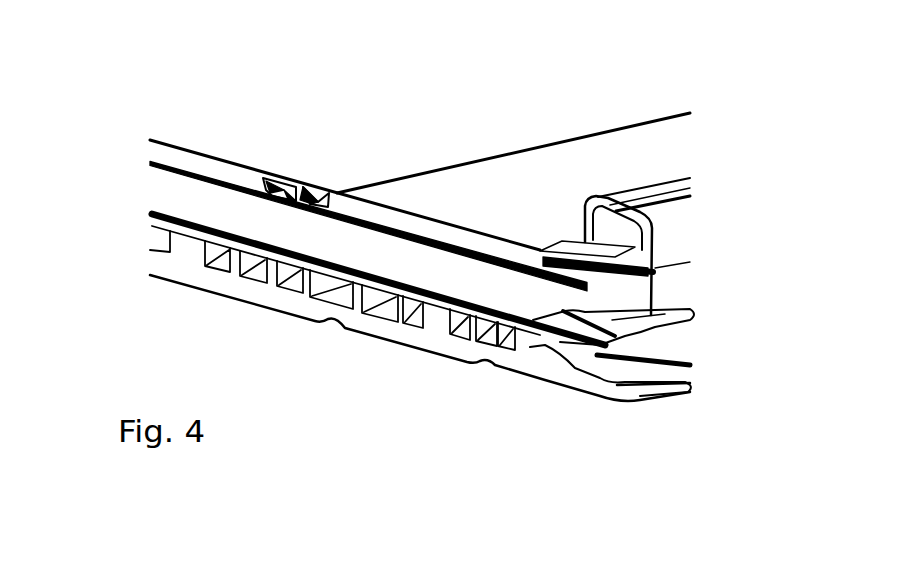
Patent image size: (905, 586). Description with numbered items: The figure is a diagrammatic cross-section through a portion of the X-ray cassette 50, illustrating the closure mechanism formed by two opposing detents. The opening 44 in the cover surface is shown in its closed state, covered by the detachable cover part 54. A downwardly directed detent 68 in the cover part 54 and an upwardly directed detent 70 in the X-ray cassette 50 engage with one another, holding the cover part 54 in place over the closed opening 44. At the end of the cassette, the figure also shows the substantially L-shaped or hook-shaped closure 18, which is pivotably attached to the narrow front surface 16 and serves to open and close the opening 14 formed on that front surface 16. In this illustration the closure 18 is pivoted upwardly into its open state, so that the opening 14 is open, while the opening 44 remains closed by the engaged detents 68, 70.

The cover part 54 is at (305, 89).
The upwardly directed detent 70 is at (278, 180).
The downwardly directed detent 68 is at (312, 187).
The opening 44 is at (176, 195).
The closure 18 is at (675, 244).
The front surface 16 is at (698, 350).
The X-ray cassette 50 is at (392, 373).
The opening 14 is at (674, 397).